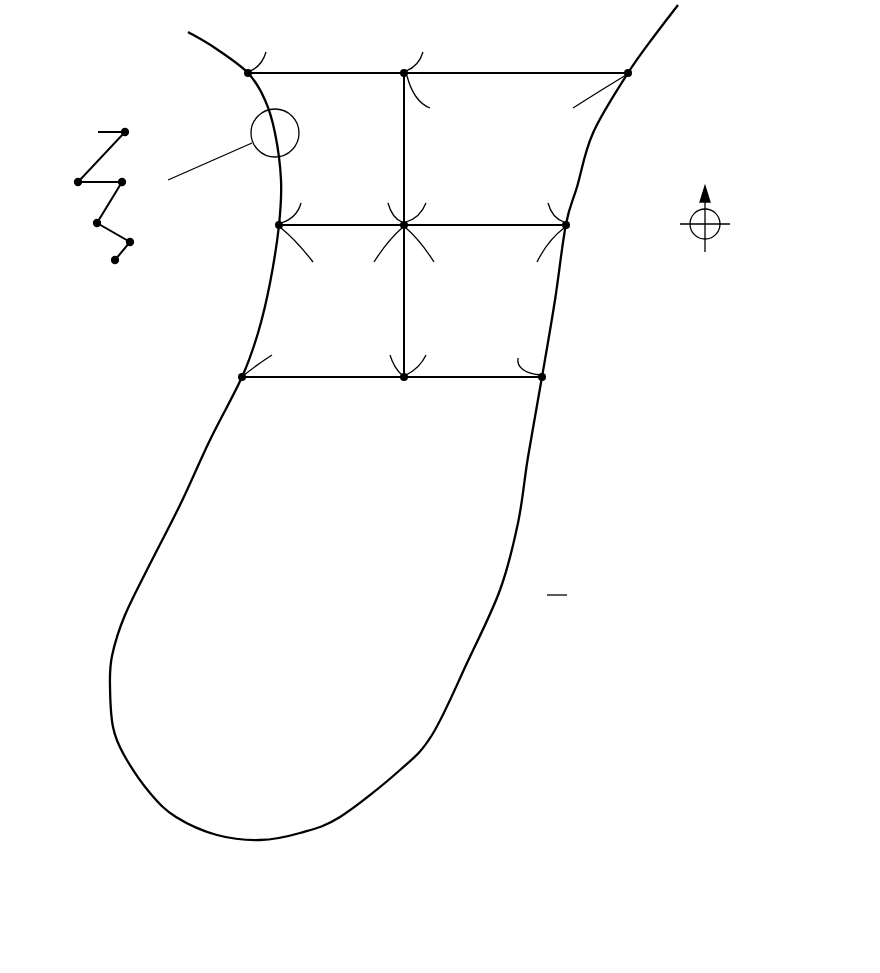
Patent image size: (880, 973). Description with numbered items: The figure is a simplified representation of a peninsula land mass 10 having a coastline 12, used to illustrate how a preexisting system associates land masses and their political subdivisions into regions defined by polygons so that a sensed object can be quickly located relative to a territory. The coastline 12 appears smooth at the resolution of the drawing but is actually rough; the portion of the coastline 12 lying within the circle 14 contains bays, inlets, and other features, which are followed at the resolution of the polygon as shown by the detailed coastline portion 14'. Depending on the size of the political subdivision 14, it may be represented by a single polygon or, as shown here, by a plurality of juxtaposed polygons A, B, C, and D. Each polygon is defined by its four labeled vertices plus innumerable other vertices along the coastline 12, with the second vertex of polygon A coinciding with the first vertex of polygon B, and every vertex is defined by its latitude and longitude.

The peninsula land mass 10 is at (403, 426).
The coastline 12 is at (531, 457).
The circle 14 is at (449, 115).
The detailed coastline portion 14' is at (125, 196).